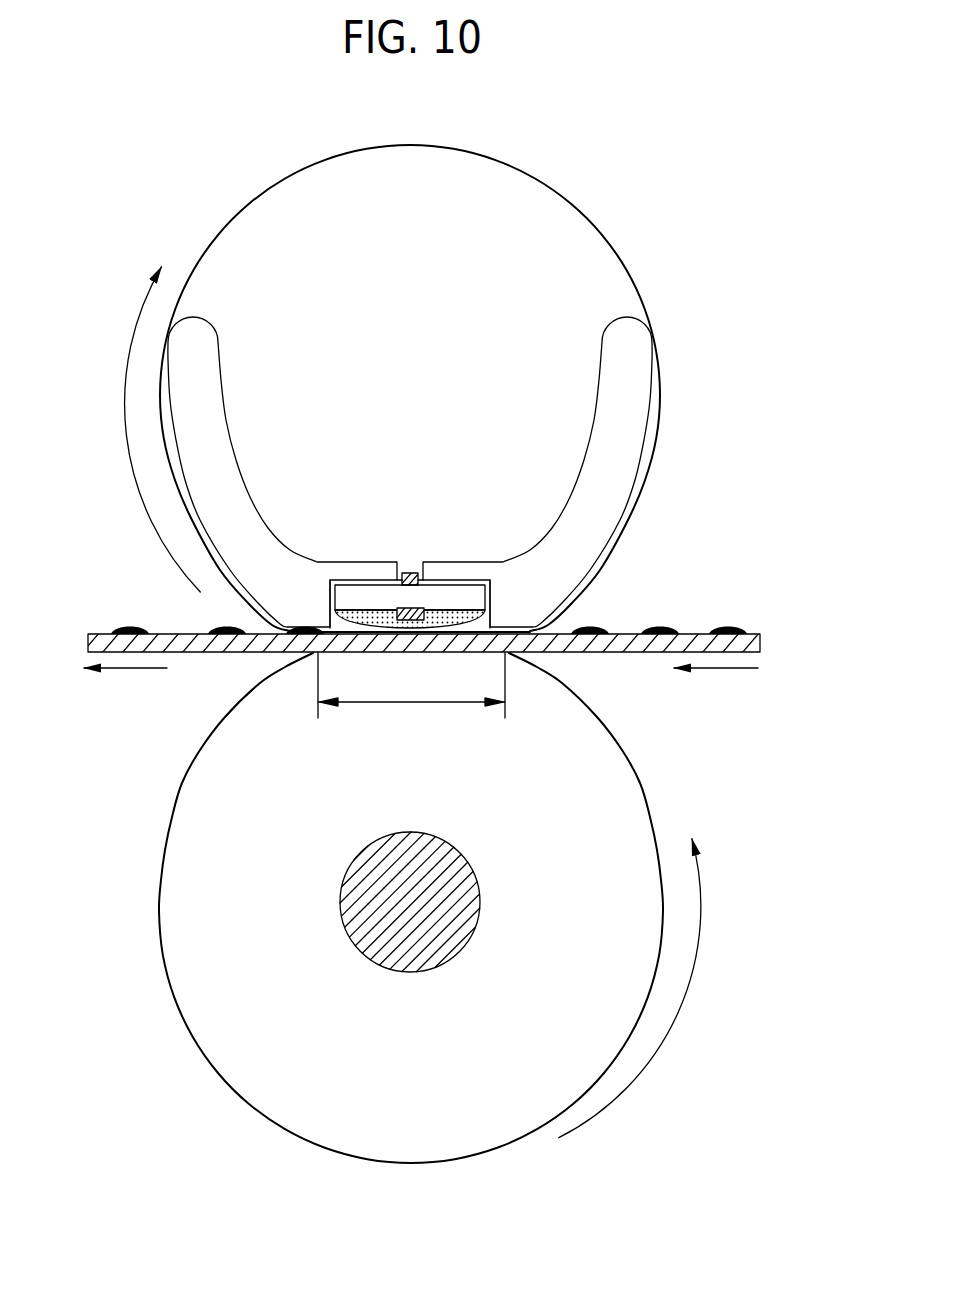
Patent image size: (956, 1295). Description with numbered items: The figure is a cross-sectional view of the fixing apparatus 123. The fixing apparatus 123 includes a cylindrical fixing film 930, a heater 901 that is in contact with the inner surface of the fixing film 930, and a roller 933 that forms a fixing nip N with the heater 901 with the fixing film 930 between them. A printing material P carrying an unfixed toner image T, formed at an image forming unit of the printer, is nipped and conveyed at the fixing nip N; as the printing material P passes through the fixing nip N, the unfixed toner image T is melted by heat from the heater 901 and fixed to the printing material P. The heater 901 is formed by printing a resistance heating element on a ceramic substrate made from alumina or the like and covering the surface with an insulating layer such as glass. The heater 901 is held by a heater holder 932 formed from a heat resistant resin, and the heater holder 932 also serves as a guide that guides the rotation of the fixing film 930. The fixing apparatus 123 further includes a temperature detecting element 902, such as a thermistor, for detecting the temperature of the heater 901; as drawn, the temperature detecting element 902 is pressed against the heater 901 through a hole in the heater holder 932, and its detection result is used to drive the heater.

The fixing apparatus 123 is at (141, 156).
The fixing film 930 is at (632, 277).
The heater holder 932 is at (633, 377).
The temperature detecting element 902 is at (411, 572).
The heater 901 is at (424, 615).
The roller 933 is at (207, 973).
The printing material P is at (762, 643).
The unfixed toner image T is at (660, 627).
The fixing nip N is at (411, 694).